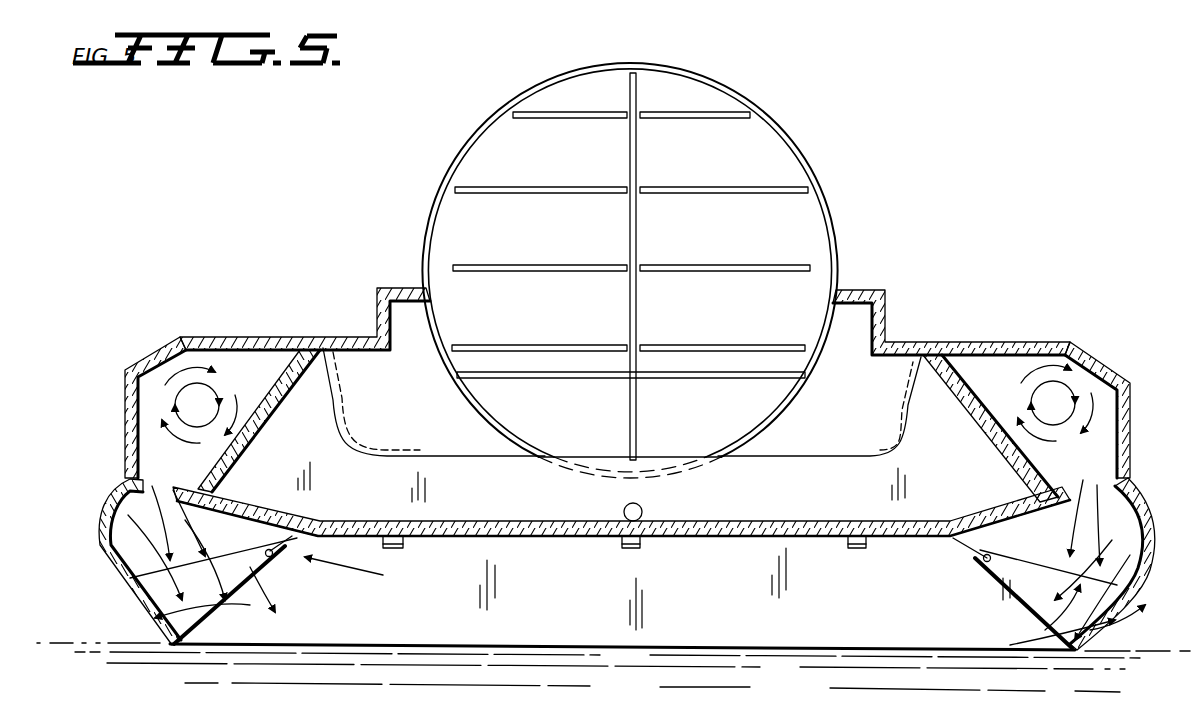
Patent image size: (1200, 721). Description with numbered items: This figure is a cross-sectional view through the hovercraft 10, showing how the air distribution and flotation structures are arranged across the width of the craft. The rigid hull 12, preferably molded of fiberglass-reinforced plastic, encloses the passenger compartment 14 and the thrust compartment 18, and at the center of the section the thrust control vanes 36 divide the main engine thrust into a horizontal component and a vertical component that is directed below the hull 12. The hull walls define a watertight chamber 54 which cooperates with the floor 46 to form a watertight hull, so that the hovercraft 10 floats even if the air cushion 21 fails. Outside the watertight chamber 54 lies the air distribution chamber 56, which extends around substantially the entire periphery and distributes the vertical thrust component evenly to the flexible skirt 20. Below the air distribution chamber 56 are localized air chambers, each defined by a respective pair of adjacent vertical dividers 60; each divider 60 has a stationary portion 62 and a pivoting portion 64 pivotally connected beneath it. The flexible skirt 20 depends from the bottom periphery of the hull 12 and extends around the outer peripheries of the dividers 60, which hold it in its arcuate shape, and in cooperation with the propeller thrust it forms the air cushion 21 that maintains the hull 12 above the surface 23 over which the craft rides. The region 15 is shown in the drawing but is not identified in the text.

The hovercraft 10 is at (613, 383).
The rigid hull 12 is at (1130, 418).
The passenger compartment 14 is at (985, 438).
The passage below inclined wall 15 is at (985, 518).
The thrust compartment 18 is at (642, 270).
The flexible skirt 20 is at (100, 543).
The air cushion 21 is at (768, 628).
The surface 23 is at (640, 702).
The thrust control vanes 36 is at (570, 120).
The floor 46 is at (514, 520).
The watertight chamber 54 is at (125, 437).
The air distribution chamber 56 is at (265, 363).
The vertical dividers 60 is at (361, 574).
The stationary portion 62 is at (120, 521).
The pivoting portion 64 is at (250, 570).